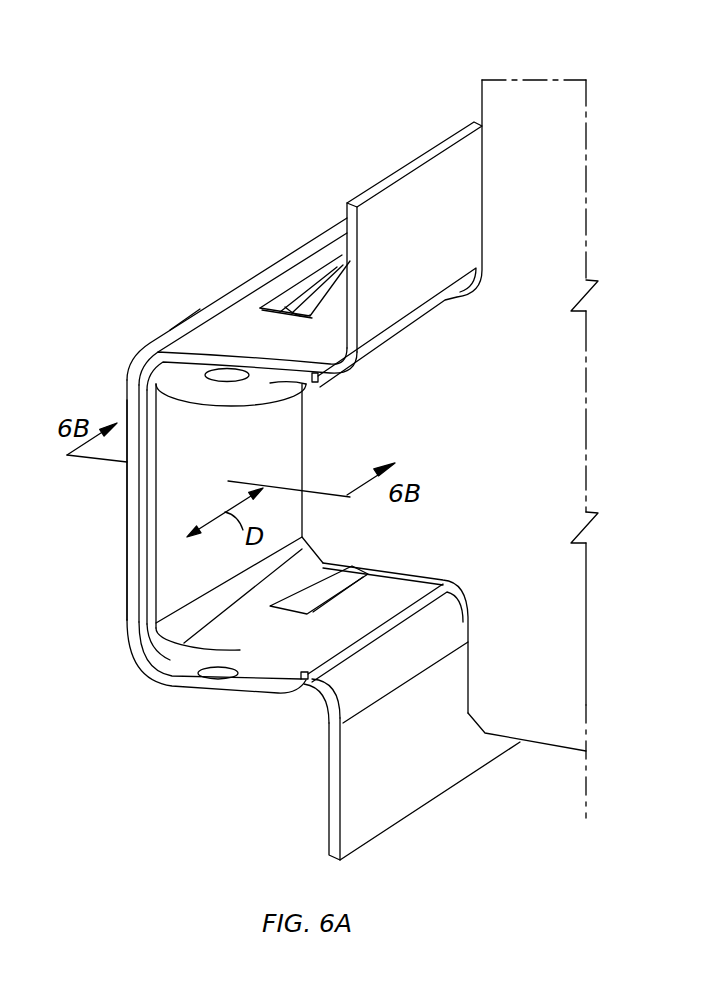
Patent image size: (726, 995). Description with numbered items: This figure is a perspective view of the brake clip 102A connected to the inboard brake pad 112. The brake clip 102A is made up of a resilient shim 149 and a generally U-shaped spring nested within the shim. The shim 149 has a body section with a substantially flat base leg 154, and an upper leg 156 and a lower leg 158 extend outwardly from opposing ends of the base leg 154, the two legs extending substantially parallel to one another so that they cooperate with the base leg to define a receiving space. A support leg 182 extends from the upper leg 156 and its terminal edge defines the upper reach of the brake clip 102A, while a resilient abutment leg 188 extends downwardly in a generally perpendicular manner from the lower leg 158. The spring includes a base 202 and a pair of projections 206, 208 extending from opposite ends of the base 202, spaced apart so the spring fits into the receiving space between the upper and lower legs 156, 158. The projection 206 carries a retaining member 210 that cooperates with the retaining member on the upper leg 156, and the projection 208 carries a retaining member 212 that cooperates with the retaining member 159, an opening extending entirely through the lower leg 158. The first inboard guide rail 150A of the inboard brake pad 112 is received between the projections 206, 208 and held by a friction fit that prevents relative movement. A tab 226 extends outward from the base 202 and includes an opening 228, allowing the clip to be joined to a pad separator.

The inboard brake pad 112 is at (636, 104).
The first inboard guide rail 150A is at (450, 432).
The support leg 182 is at (426, 180).
The upper leg 156 is at (230, 318).
The retaining member 159 is at (333, 240).
The retaining member 210 is at (304, 295).
The brake clip 102A is at (178, 250).
The shim 149 is at (84, 295).
The base leg 154 is at (127, 538).
The base 202 is at (258, 463).
The opening 228 is at (210, 370).
The projection 206 is at (322, 381).
The tab 226 is at (268, 383).
The projection 208 is at (157, 623).
The retaining member 212 is at (340, 580).
The lower leg 158 is at (308, 692).
The resilient abutment leg 188 is at (350, 763).